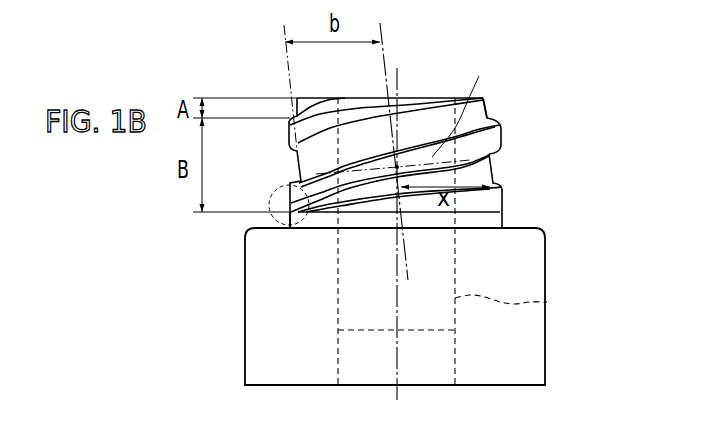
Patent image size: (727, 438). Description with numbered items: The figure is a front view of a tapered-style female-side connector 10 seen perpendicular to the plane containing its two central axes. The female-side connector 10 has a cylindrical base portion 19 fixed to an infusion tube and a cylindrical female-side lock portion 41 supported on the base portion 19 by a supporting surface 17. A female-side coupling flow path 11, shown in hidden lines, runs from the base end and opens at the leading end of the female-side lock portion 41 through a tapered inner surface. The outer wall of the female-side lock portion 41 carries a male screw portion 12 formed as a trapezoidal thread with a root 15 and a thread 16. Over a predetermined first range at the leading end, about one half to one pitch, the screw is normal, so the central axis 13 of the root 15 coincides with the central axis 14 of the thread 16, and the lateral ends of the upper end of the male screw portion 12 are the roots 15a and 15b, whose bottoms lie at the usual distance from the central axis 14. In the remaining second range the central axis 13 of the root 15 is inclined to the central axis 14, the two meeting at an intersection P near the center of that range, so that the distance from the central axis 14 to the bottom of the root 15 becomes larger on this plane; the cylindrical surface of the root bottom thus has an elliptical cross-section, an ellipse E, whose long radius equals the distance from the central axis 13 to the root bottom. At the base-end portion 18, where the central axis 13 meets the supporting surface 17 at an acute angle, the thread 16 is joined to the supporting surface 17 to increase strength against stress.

The female-side connector 10 is at (522, 66).
The female-side coupling flow path 11 is at (548, 302).
The male screw portion 12 is at (289, 164).
The central axis of the root 13 is at (385, 92).
The central axis of the thread 14 is at (399, 88).
The root 15 is at (495, 172).
The root 15a is at (294, 110).
The root 15b is at (485, 101).
The thread 16 is at (503, 134).
The supporting surface 17 is at (522, 228).
The portion 18 is at (256, 220).
The cylindrical base portion 19 is at (546, 357).
The female-side lock portion 41 is at (588, 170).
The ellipse E is at (459, 103).
The intersection P is at (277, 191).